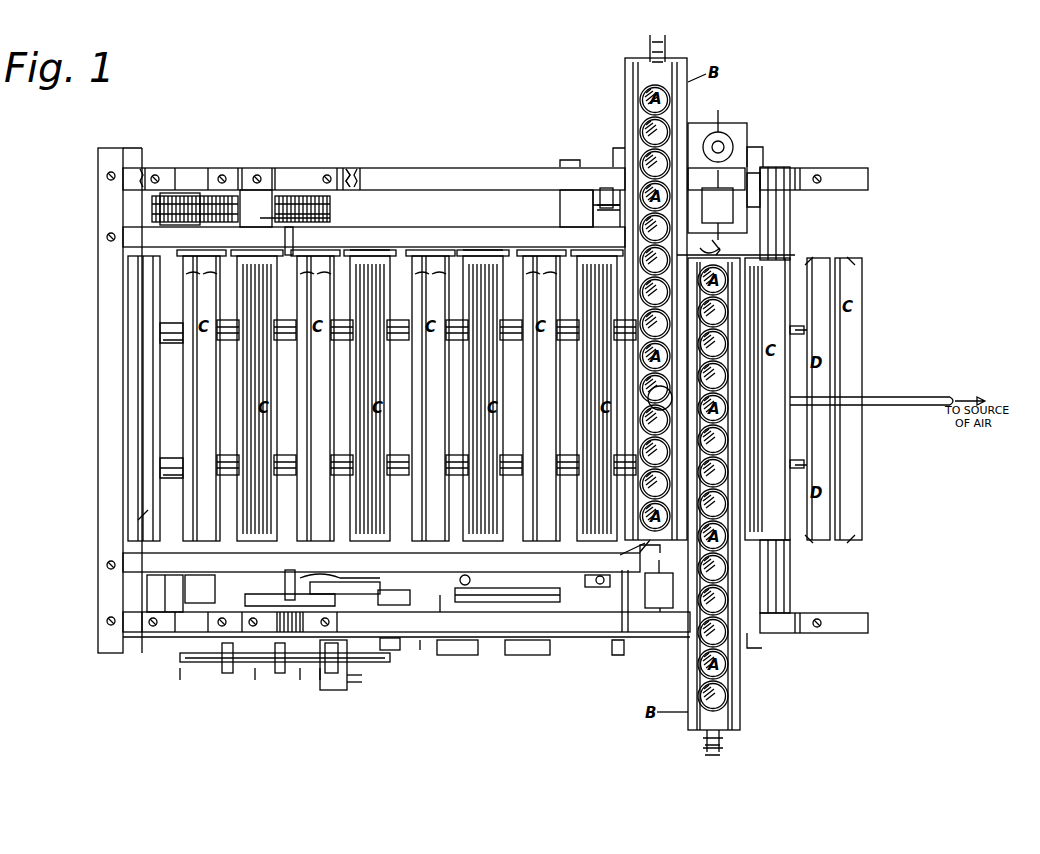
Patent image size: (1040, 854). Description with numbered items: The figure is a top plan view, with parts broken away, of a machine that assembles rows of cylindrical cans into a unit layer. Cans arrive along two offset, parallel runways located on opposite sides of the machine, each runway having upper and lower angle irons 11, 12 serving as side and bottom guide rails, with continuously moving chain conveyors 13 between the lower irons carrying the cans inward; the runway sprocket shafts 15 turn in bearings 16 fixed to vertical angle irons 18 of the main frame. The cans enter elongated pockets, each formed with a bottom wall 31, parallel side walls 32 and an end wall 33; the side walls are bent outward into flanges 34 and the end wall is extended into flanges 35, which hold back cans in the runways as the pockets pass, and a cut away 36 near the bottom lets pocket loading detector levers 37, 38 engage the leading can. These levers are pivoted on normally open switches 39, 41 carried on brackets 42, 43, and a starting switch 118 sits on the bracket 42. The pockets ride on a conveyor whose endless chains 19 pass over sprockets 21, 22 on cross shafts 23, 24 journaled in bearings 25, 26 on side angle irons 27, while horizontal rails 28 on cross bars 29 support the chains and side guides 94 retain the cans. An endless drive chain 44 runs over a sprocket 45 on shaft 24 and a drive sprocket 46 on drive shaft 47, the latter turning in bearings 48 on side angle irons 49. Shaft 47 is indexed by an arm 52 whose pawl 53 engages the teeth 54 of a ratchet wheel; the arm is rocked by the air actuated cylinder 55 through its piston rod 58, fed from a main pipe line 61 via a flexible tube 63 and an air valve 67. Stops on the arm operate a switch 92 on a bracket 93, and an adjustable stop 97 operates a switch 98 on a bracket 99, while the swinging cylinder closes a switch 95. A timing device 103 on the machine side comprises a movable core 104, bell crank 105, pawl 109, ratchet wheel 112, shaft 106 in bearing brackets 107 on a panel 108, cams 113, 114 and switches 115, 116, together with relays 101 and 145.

The side angle irons 27 is at (130, 640).
The bearing 26 is at (198, 190).
The cross shaft 24 is at (178, 250).
The endless drive chain 44 is at (215, 198).
The sprocket 45 is at (168, 194).
The bearings 48 is at (295, 196).
The cross bars 29 is at (413, 388).
The drive sprocket 46 is at (330, 218).
The side angle irons 49 is at (346, 169).
The drive shaft 47 is at (285, 248).
The side guides 94 is at (469, 381).
The bearings 16 is at (582, 600).
The vertical angle irons 18 is at (613, 158).
The bottom wall 31 is at (394, 395).
The end wall 33 is at (419, 384).
The horizontal rails 28 is at (403, 322).
The side walls 32 is at (371, 402).
The flanges 34 is at (382, 385).
The flanges 35 is at (394, 400).
The chain sprocket 22 is at (165, 323).
The endless chains 19 is at (172, 345).
The cut away 36 is at (496, 394).
The upper angle irons 11 is at (625, 92).
The lower angle irons 12 is at (630, 60).
The chain conveyors 13 is at (665, 38).
The air valve 67 is at (660, 397).
The bracket 42 is at (717, 178).
The starting switch 118 is at (724, 136).
The electric switch 39 is at (717, 205).
The pocket loading detector lever 37 is at (705, 243).
The cross shaft 23 is at (790, 205).
The bearing 25 is at (800, 168).
The chain sprocket 21 is at (790, 318).
The main pipe line 61 is at (900, 397).
The air actuated cylinder 55 is at (485, 600).
The bearing brackets 107 is at (180, 665).
The timing device 103 is at (238, 705).
The cam 113 is at (228, 673).
The cam 114 is at (280, 673).
The ratchet wheel 112 is at (325, 672).
The movable core 104 is at (330, 690).
The shaft 106 is at (198, 691).
The switch 115 is at (240, 691).
The switch 116 is at (279, 692).
The pawl 109 is at (305, 687).
The bell crank 105 is at (374, 680).
The bracket 99 is at (147, 585).
The electric switch 98 is at (170, 595).
The teeth 54 is at (245, 600).
The arm 52 is at (292, 575).
The adjustable stop 97 is at (340, 573).
The pawl 53 is at (350, 597).
The switch 92 is at (394, 595).
The piston rod 58 is at (445, 601).
The flexible tube 63 is at (470, 580).
The electric switch 95 is at (596, 582).
The pocket loading detector lever 38 is at (640, 552).
The bracket 43 is at (659, 584).
The shaft 15 is at (628, 601).
The electric switch 41 is at (673, 619).
The relay 145 is at (520, 640).
The bracket 93 is at (400, 640).
The panel 108 is at (410, 653).
The relay 101 is at (460, 655).